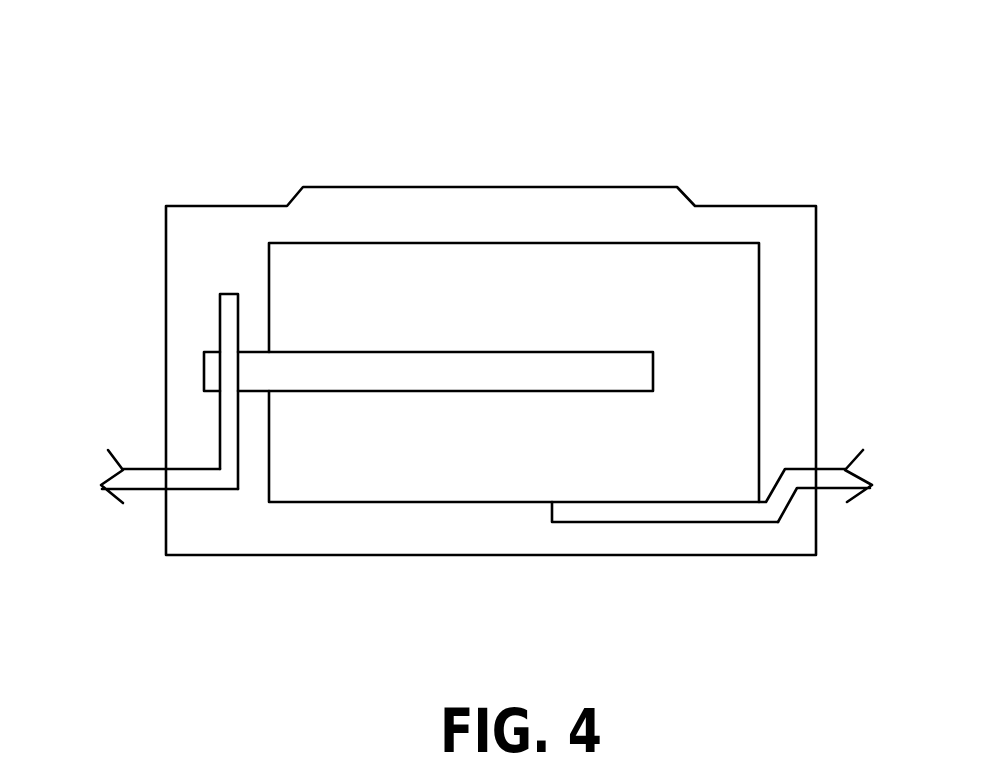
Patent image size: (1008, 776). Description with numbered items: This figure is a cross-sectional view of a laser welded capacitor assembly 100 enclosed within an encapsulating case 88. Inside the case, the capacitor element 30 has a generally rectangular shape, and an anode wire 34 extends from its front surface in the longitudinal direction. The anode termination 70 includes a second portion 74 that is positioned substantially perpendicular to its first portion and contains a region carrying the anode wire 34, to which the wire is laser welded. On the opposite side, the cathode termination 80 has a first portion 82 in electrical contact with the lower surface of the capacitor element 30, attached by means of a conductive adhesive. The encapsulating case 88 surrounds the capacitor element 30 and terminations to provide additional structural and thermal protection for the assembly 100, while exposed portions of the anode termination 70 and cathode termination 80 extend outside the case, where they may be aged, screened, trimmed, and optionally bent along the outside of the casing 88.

The capacitor assembly 100 is at (377, 126).
The encapsulating case 88 is at (802, 230).
The capacitor element 30 is at (688, 270).
The anode wire 34 is at (503, 370).
The second portion 74 is at (218, 414).
The anode termination 70 is at (110, 473).
The cathode termination 80 is at (830, 468).
The first portion 82 is at (703, 512).